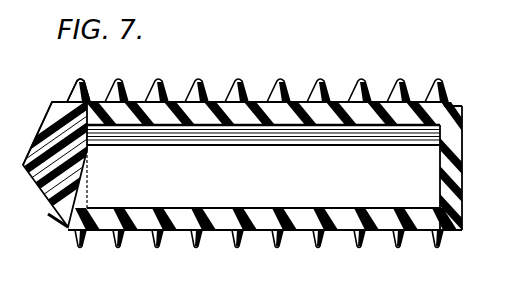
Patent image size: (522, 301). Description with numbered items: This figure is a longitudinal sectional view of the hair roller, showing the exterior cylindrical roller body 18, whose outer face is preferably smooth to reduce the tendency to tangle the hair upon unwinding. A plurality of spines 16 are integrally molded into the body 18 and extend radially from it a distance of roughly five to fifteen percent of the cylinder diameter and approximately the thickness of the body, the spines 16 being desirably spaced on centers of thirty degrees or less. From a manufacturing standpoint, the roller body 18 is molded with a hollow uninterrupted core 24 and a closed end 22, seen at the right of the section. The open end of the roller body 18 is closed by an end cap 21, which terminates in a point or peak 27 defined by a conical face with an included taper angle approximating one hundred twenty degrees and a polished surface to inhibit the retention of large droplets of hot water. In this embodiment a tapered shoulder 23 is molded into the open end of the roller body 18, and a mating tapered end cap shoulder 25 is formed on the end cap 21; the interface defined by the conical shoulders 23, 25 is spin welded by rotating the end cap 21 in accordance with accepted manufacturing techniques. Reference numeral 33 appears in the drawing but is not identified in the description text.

The spines 16 is at (243, 88).
The roller body 18 is at (373, 117).
The end cap 21 is at (42, 135).
The closed end 22 is at (465, 118).
The tapered shoulder 23 is at (83, 110).
The hollow uninterrupted core 24 is at (292, 140).
The tapered end cap shoulder 25 is at (80, 153).
The point or peak 27 is at (23, 165).
The corner 33 is at (40, 128).